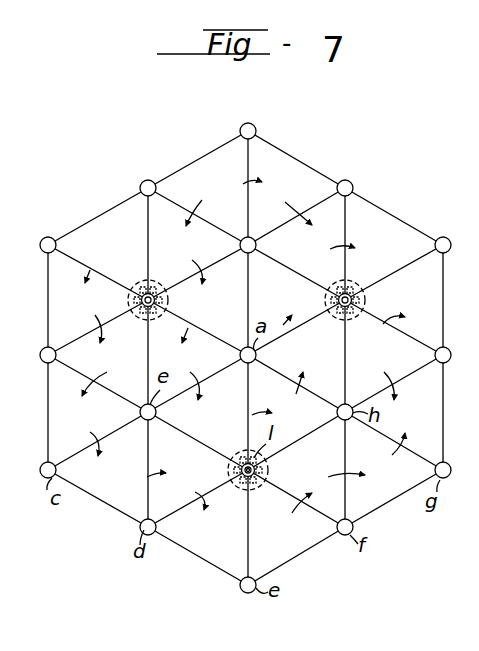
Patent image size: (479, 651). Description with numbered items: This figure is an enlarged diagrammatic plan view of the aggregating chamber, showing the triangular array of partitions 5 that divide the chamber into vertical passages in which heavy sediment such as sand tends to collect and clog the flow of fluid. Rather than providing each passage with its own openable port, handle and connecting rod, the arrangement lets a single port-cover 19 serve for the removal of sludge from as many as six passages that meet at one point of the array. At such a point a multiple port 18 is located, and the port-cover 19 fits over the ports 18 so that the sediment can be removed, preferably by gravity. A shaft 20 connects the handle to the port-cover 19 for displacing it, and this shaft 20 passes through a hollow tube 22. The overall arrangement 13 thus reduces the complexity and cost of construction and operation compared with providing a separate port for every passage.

The partitions 5 is at (80, 254).
The lattice framework 13 is at (116, 222).
The multiple port 18 is at (158, 285).
The port-cover 19 is at (172, 300).
The shaft 20 is at (130, 318).
The hollow tube 22 is at (226, 468).